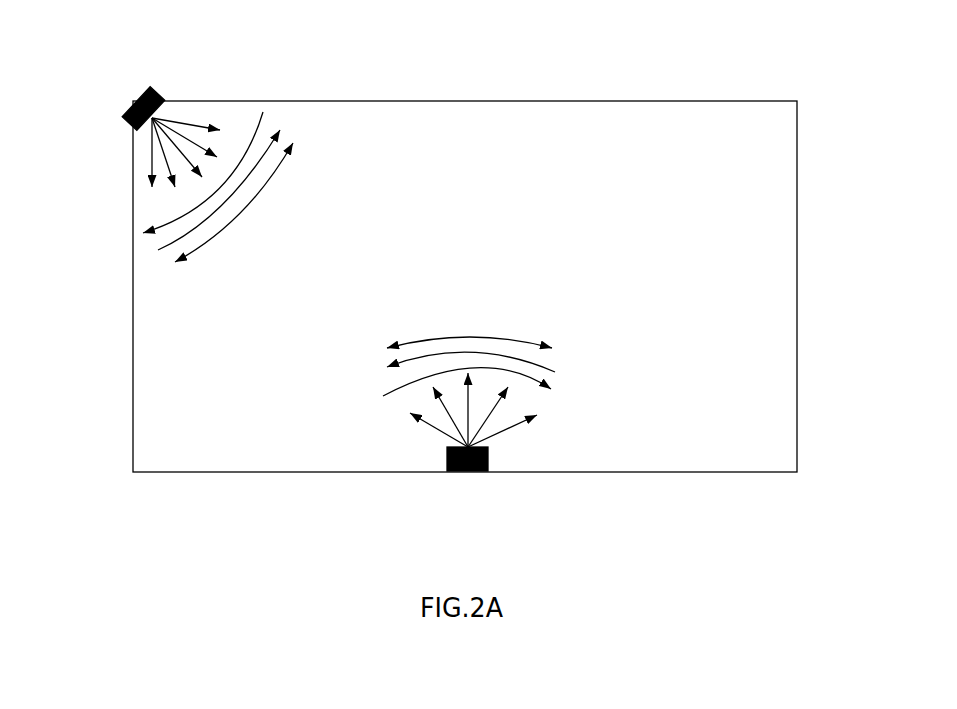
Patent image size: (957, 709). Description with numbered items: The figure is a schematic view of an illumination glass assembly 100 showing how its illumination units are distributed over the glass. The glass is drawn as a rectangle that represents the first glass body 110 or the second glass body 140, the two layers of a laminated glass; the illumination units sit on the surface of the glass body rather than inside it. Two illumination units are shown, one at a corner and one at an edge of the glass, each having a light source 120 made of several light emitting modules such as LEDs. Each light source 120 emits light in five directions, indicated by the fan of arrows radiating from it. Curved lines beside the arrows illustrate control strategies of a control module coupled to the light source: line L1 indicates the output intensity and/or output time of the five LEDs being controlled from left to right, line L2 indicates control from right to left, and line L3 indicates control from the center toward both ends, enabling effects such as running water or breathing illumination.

The illumination glass assembly 100 is at (483, 56).
The first glass body 110 is at (702, 454).
The second glass body 140 is at (465, 286).
The light source 120 is at (129, 124).
The line L1 is at (400, 390).
The line L2 is at (540, 362).
The line L3 is at (526, 342).